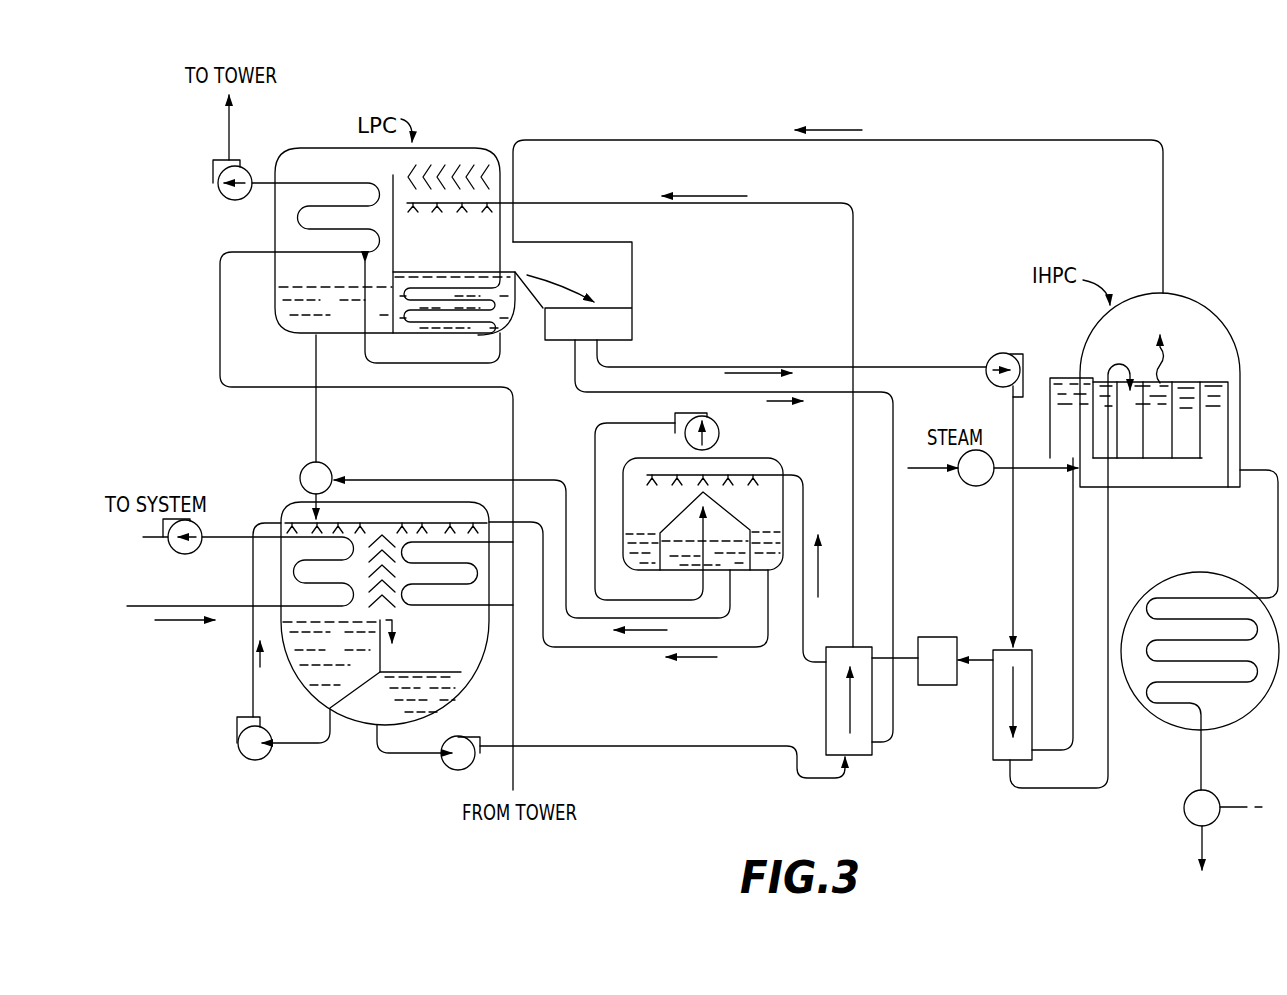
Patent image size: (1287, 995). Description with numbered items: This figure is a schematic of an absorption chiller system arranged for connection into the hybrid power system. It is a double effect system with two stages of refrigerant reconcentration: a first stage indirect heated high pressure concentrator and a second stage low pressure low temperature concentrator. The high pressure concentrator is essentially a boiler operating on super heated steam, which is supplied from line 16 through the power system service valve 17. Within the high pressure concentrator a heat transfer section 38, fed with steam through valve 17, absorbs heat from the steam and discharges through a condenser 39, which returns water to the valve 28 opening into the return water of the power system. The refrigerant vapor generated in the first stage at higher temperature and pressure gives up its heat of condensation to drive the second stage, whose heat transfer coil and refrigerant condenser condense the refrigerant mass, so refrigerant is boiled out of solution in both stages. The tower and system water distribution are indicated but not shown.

The steam line 16 is at (935, 478).
The power system service valve 17 is at (975, 487).
The heat transfer section 38 is at (1168, 477).
The condenser 39 is at (1178, 573).
The valve 28 is at (1182, 807).